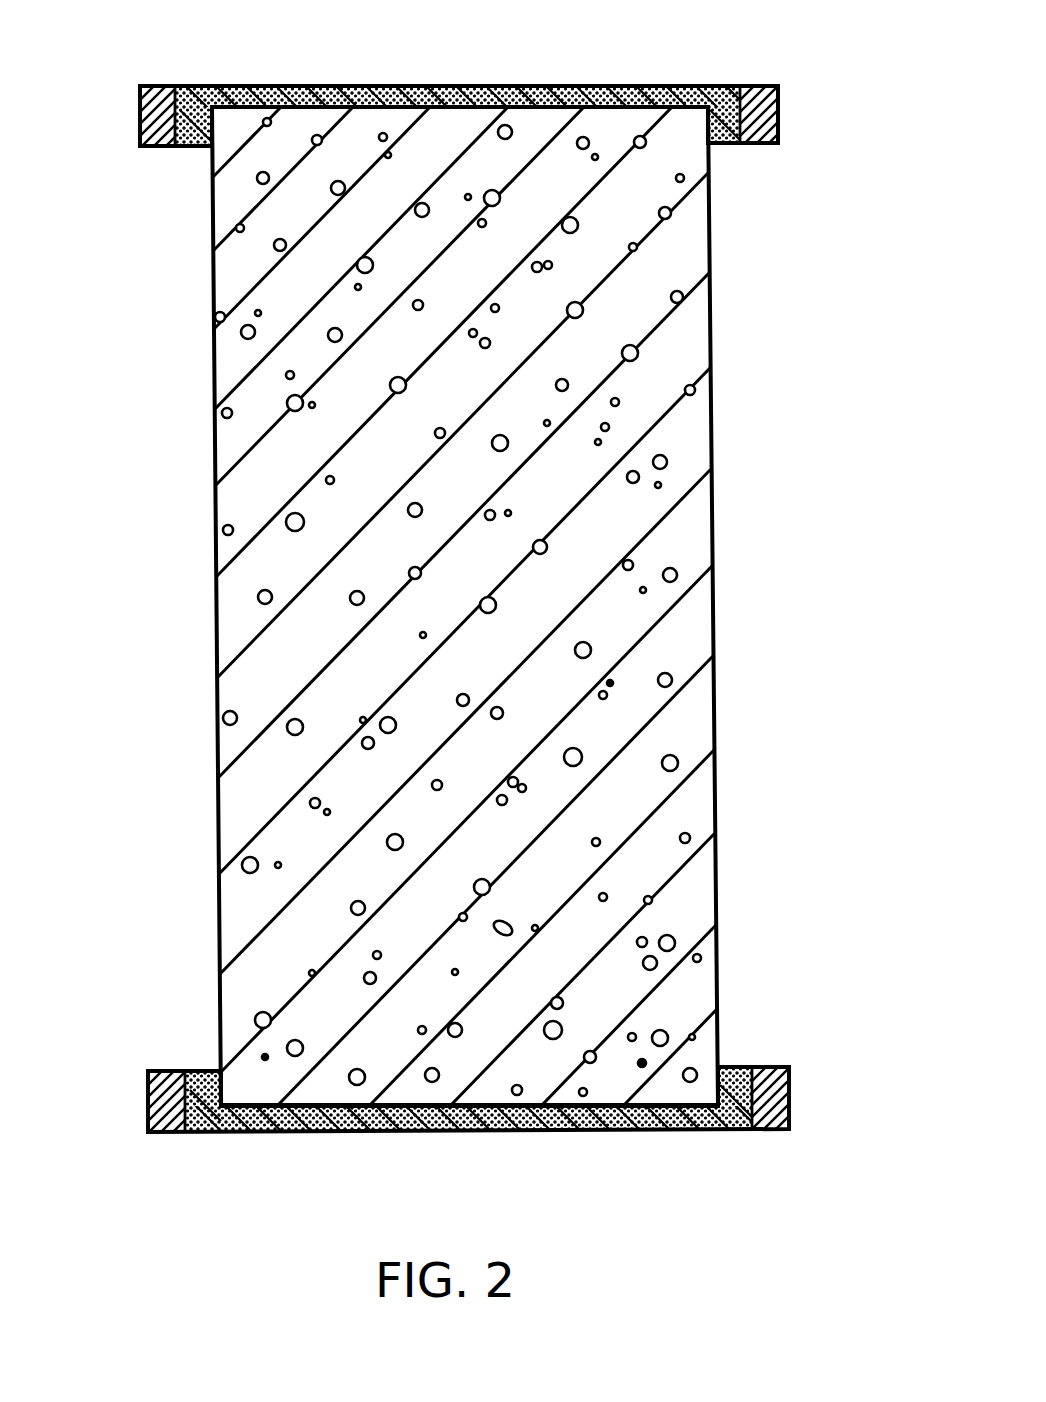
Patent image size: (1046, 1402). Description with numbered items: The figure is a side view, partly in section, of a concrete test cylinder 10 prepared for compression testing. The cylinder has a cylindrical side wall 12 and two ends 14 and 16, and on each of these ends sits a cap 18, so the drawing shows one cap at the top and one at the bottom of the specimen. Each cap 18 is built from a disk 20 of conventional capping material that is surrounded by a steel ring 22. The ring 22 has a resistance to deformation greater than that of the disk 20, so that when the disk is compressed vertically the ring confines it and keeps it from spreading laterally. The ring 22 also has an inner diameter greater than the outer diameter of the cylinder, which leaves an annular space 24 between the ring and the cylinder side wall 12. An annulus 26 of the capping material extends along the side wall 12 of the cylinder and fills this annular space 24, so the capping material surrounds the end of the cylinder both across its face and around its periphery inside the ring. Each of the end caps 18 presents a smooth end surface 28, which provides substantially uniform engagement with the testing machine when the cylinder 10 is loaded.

The concrete test cylinder 10 is at (782, 498).
The cylindrical side wall 12 is at (720, 396).
The end 14 is at (627, 105).
The end 16 is at (515, 1133).
The cap 18 is at (804, 75).
The disk 20 is at (330, 78).
The steel ring 22 is at (779, 110).
The annular space 24 is at (188, 152).
The annulus 26 is at (726, 144).
The smooth end surface 28 is at (440, 85).